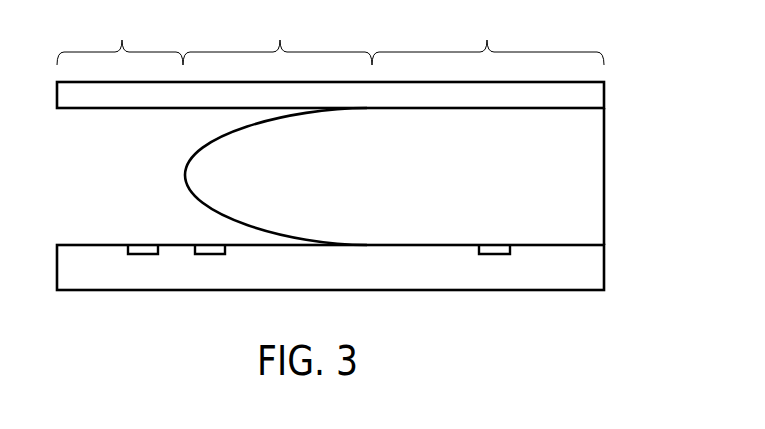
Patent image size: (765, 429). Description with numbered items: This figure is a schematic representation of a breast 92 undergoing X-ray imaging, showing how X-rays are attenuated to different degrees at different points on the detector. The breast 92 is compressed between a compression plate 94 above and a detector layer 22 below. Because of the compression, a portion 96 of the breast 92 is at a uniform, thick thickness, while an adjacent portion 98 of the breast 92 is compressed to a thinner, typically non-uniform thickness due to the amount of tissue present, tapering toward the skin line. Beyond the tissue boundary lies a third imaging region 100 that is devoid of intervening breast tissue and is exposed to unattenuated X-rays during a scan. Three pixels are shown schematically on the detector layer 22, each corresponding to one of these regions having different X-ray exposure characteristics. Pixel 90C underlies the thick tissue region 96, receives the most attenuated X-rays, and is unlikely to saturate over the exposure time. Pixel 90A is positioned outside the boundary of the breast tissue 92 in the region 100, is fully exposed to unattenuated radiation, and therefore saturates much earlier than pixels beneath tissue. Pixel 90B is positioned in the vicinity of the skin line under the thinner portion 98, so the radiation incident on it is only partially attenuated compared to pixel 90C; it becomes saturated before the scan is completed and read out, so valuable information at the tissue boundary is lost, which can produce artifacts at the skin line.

The substrate 22 is at (604, 263).
The breast 92 is at (604, 175).
The compression plate 94 is at (604, 93).
The portion of uniform thickness 96 is at (487, 40).
The thinner portion 98 is at (280, 40).
The third imaging region 100 is at (122, 40).
The pixel 90A is at (133, 245).
The pixel 90B is at (200, 245).
The pixel 90C is at (495, 254).